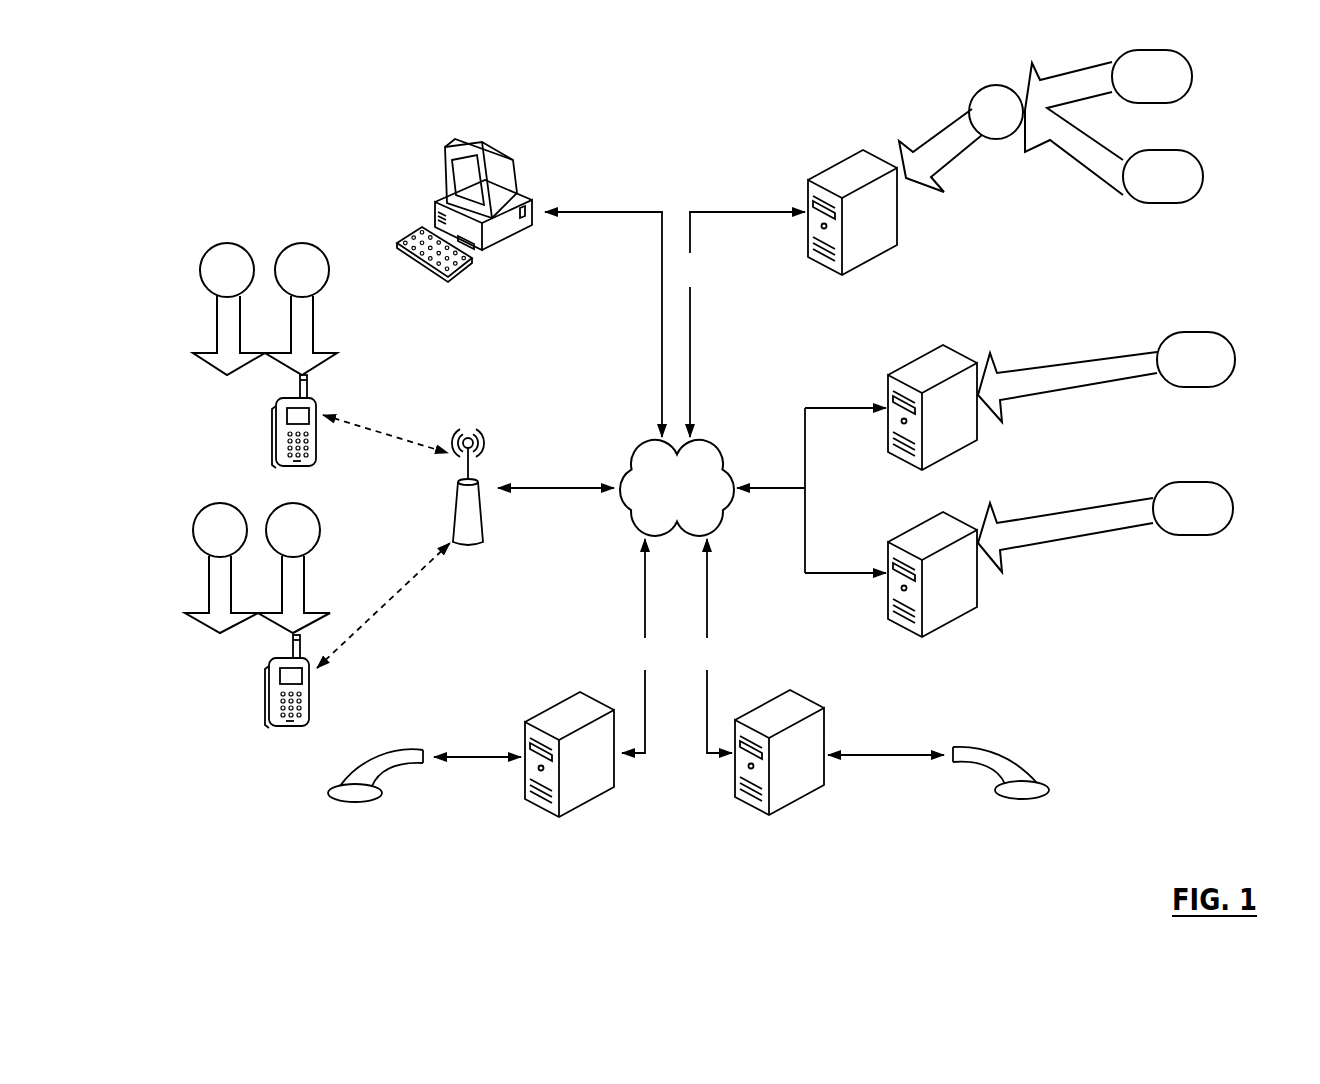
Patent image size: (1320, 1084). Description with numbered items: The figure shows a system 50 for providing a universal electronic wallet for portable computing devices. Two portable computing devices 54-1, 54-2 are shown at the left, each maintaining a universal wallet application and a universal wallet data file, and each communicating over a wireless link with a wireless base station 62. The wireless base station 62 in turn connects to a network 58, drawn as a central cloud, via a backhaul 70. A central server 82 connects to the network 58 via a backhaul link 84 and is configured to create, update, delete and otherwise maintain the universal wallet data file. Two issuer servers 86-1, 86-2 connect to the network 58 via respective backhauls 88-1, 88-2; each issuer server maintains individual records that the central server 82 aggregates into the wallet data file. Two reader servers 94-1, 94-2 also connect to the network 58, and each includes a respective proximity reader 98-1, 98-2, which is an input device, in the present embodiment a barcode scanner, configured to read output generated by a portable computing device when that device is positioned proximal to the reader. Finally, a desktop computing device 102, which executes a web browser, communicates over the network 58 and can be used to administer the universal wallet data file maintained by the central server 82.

The system 50 is at (188, 836).
The portable computing device 54-1 is at (242, 355).
The portable computing device 54-2 is at (234, 615).
The network 58 is at (690, 501).
The wireless base station 62 is at (484, 558).
The backhaul 70 is at (571, 502).
The central server 82 is at (1005, 169).
The backhaul link 84 is at (707, 284).
The issuer server 86-1 is at (1061, 405).
The issuer server 86-2 is at (1060, 583).
The backhaul 88-1 is at (830, 459).
The backhaul 88-2 is at (830, 547).
The reader server 94-1 is at (593, 806).
The reader server 94-2 is at (804, 806).
The proximity reader 98-1 is at (360, 808).
The proximity reader 98-2 is at (1029, 810).
The desktop computing device 102 is at (436, 170).